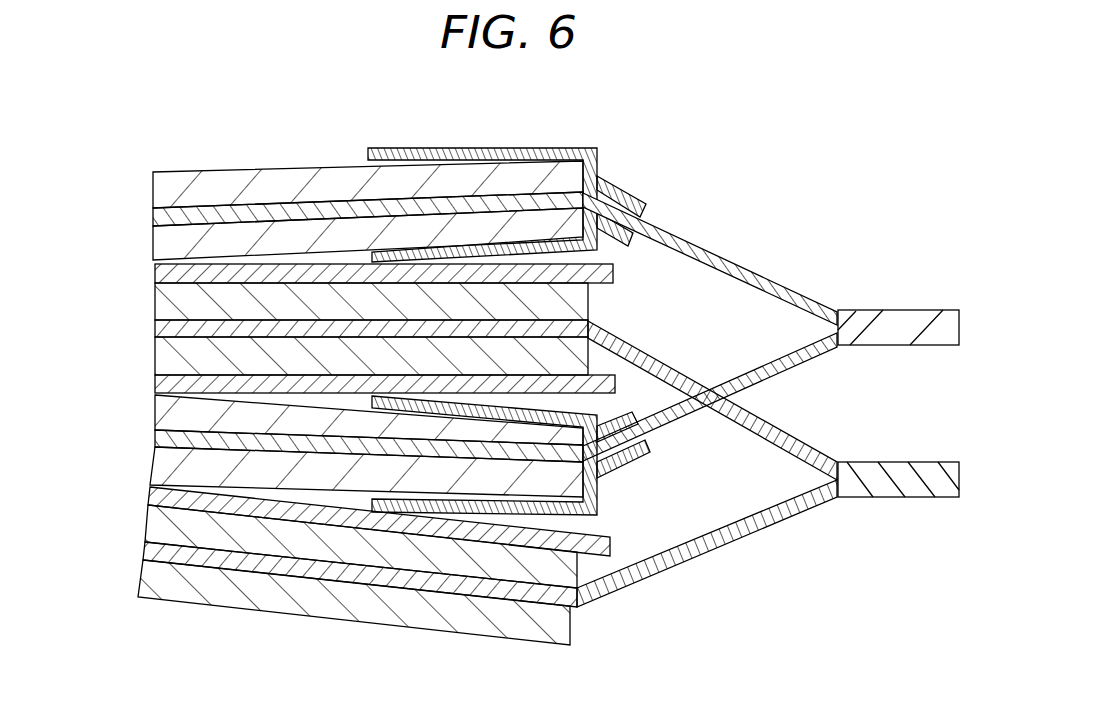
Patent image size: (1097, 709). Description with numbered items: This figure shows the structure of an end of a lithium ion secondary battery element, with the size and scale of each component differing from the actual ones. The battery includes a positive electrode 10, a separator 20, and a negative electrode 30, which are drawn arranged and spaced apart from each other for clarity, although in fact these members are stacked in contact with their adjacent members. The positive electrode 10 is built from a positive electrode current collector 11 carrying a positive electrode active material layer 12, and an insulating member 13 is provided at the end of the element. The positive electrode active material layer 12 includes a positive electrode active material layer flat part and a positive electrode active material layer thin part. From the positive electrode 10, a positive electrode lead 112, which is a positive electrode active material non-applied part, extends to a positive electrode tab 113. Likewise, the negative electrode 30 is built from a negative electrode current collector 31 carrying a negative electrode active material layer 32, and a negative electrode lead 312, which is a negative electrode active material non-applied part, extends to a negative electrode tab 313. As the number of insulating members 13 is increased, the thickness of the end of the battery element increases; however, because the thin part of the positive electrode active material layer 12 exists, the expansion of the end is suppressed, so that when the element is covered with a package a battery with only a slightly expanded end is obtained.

The positive electrode 10 is at (84, 168).
The positive electrode current collector 11 is at (153, 220).
The positive electrode active material layer 12 is at (153, 190).
The insulating member 13 is at (472, 147).
The separator 20 is at (153, 276).
The negative electrode 30 is at (84, 287).
The negative electrode current collector 31 is at (153, 330).
The negative electrode active material layer 32 is at (153, 302).
The positive electrode lead 112 is at (652, 208).
The positive electrode tab 113 is at (898, 325).
The negative electrode lead 312 is at (652, 345).
The negative electrode tab 313 is at (900, 468).